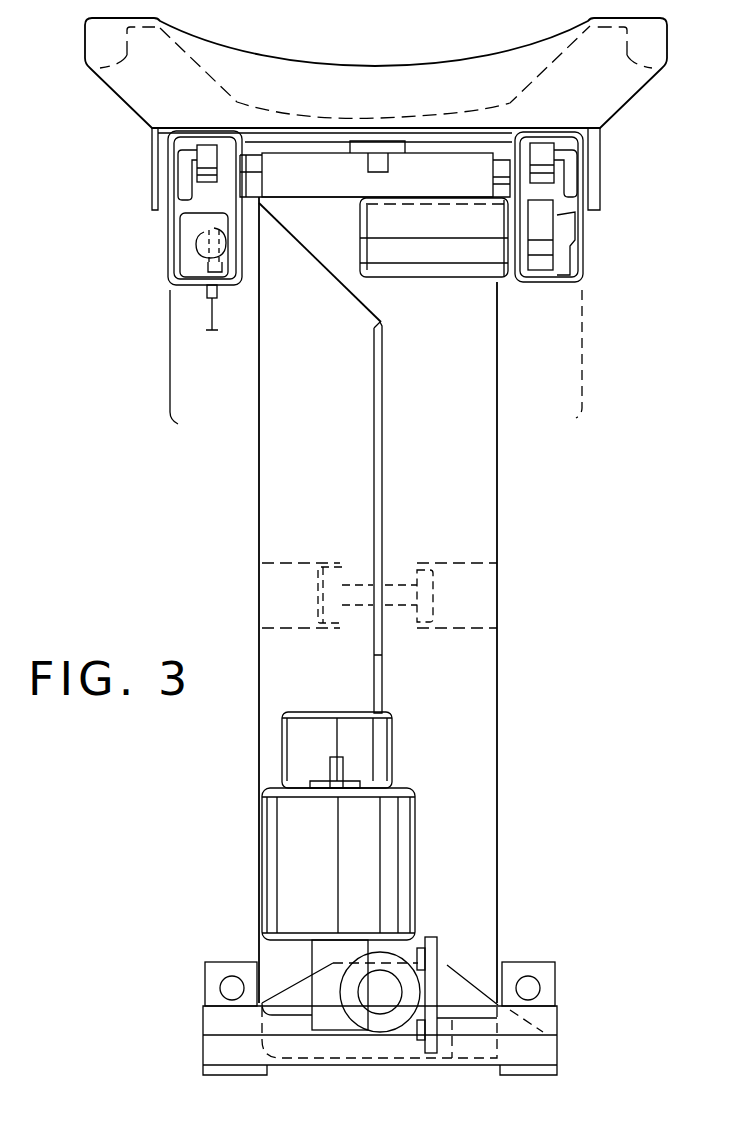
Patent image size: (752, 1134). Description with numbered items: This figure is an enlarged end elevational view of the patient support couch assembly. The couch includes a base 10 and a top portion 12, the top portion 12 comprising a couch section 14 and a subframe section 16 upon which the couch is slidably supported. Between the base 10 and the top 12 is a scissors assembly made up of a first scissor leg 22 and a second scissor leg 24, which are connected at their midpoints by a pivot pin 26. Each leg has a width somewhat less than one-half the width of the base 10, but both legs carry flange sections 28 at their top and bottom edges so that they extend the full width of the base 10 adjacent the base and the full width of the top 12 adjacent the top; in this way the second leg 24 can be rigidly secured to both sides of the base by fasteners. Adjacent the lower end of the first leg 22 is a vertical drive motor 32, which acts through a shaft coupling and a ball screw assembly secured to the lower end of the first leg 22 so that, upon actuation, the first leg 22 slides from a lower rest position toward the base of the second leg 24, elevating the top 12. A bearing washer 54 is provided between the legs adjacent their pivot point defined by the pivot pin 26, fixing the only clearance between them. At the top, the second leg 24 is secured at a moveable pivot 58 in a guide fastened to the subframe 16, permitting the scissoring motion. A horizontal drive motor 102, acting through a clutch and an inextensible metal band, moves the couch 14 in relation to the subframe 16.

The base 10 is at (565, 1033).
The top portion 12 is at (137, 121).
The couch section 14 is at (650, 85).
The subframe section 16 is at (605, 180).
The first scissor leg 22 is at (287, 500).
The second scissor leg 24 is at (465, 412).
The pivot pin 26 is at (398, 598).
The flange section 28 is at (326, 250).
The vertical drive motor 32 is at (298, 853).
The bearing washer 54 is at (383, 558).
The moveable pivot 58 is at (500, 163).
The horizontal drive motor 102 is at (458, 254).